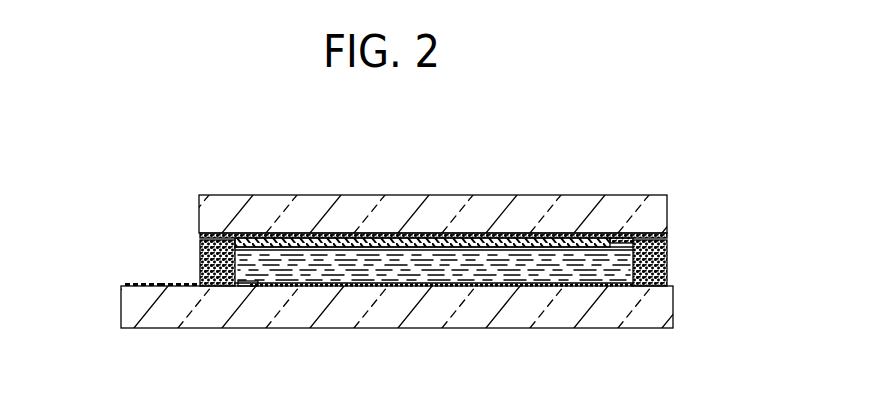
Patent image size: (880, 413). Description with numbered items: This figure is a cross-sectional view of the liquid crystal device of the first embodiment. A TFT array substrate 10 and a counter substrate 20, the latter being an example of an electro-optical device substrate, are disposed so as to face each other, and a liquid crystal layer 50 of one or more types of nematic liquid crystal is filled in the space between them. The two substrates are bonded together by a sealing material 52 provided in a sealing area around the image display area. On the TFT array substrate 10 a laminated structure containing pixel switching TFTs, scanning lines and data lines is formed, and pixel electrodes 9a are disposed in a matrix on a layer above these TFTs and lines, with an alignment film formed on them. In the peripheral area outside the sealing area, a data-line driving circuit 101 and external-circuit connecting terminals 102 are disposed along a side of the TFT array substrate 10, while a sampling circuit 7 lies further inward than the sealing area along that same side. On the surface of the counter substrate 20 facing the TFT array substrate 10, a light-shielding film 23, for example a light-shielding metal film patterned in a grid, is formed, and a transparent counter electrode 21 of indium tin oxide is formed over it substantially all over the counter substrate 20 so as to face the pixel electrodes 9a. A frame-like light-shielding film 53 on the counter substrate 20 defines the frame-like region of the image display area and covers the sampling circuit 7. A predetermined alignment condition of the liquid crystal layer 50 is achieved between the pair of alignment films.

The TFT array substrate 10 is at (468, 310).
The counter substrate 20 is at (337, 197).
The counter electrode 21 is at (558, 238).
The light-shielding film 23 is at (429, 236).
The liquid crystal layer 50 is at (378, 270).
The sealing material 52 is at (210, 262).
The frame-like light-shielding film 53 is at (248, 237).
The sampling circuit 7 is at (245, 286).
The pixel electrodes 9a is at (283, 287).
The data-line driving circuit 101 is at (178, 284).
The external-circuit connecting terminals 102 is at (128, 284).